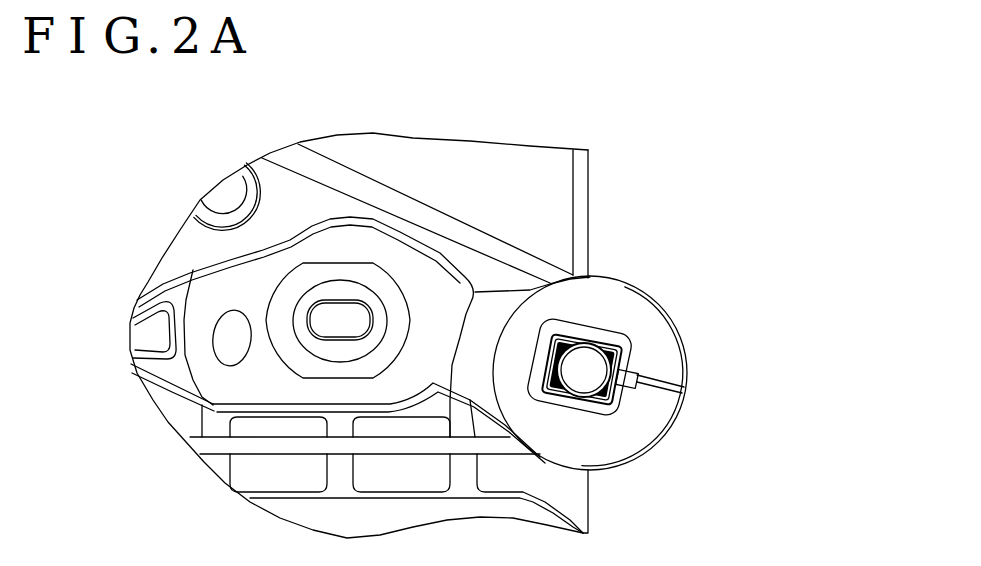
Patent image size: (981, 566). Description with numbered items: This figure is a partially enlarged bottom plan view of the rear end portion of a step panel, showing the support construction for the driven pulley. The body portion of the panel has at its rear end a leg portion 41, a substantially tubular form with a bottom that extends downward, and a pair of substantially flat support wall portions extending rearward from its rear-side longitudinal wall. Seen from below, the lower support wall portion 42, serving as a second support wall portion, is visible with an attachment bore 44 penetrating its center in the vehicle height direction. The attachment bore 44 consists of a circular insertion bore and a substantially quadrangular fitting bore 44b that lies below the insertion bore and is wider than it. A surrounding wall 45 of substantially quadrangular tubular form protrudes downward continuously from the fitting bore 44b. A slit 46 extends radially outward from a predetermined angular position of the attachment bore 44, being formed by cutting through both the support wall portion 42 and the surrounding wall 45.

The leg portion 41 is at (410, 270).
The support wall portion 42 is at (643, 313).
The attachment bore 44 is at (690, 368).
The fitting bore 44b is at (631, 334).
The surrounding wall 45 is at (597, 334).
The slit 46 is at (686, 393).